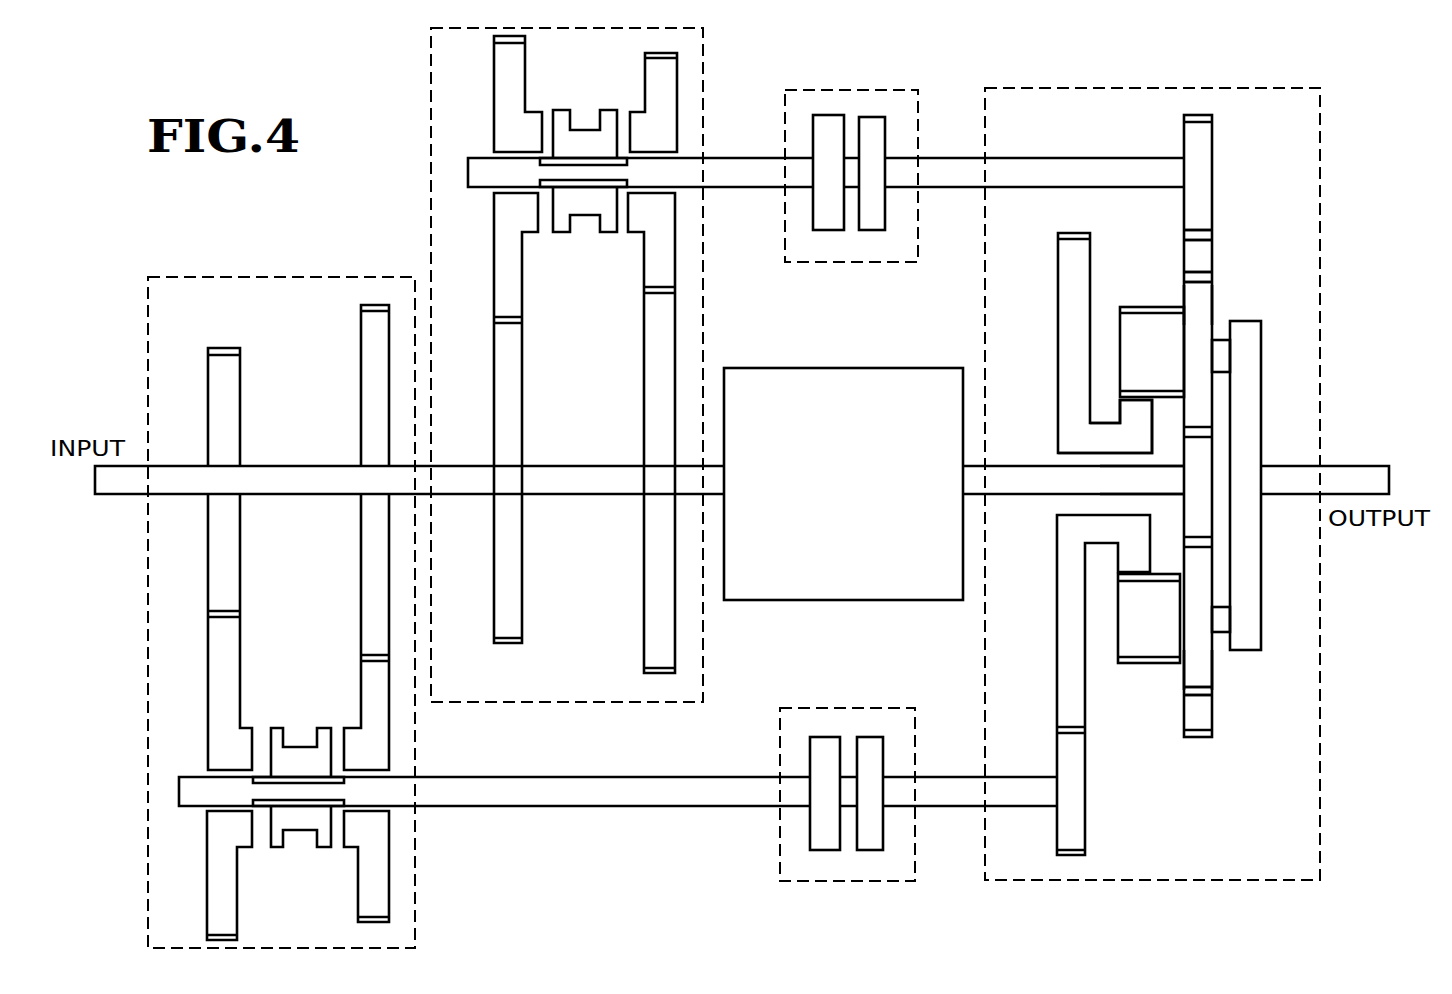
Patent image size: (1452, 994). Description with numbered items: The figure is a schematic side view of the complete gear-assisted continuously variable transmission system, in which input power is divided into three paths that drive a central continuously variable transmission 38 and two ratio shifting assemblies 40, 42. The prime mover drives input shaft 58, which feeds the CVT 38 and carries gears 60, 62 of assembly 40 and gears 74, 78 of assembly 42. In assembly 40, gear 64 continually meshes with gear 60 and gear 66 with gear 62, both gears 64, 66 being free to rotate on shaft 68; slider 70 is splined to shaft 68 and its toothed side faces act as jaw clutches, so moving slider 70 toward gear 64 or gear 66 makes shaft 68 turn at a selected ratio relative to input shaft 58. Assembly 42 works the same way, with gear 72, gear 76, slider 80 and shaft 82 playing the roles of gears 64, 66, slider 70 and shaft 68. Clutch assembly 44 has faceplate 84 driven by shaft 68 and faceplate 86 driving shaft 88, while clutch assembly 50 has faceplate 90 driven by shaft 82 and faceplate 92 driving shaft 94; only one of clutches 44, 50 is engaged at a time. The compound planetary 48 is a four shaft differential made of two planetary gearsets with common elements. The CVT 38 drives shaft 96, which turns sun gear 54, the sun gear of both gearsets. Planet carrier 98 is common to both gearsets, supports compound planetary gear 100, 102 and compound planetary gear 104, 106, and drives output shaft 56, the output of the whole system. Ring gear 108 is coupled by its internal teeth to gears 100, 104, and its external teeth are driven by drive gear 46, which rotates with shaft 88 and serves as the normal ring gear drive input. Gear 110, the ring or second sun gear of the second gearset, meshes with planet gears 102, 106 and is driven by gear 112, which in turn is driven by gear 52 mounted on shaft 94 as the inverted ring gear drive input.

The continuously variable transmission 38 is at (928, 387).
The ratio shifting assembly 40 is at (706, 100).
The ratio shifting assembly 42 is at (418, 842).
The clutch assembly 44 is at (920, 112).
The drive gear 46 is at (1205, 148).
The compound planetary 48 is at (1323, 135).
The clutch assembly 50 is at (917, 723).
The inverted ring gear drive input gear 52 is at (1080, 808).
The sun gear 54 is at (1188, 507).
The output shaft 56 is at (1293, 470).
The input shaft 58 is at (684, 482).
The gear 60 is at (508, 388).
The gear 62 is at (657, 332).
The gear 64 is at (516, 62).
The gear 66 is at (675, 78).
The shaft 68 is at (765, 133).
The slider 70 is at (592, 210).
The gear 72 is at (223, 890).
The gear 74 is at (222, 385).
The gear 76 is at (360, 900).
The gear 78 is at (368, 378).
The slider 80 is at (291, 752).
The shaft 82 is at (729, 788).
The faceplate 84 is at (822, 213).
The faceplate 86 is at (877, 143).
The shaft 88 is at (1105, 170).
The faceplate 90 is at (818, 830).
The faceplate 92 is at (873, 833).
The shaft 94 is at (958, 787).
The shaft 96 is at (1042, 452).
The planet carrier 98 is at (1245, 360).
The compound planetary gear 100 is at (1205, 297).
The compound planetary gear 102 is at (1157, 333).
The compound planetary gear 104 is at (1203, 670).
The compound planetary gear 106 is at (1160, 647).
The ring gear 108 is at (1207, 253).
The ring or second sun gear 110 is at (1137, 432).
The gear 112 is at (1075, 333).